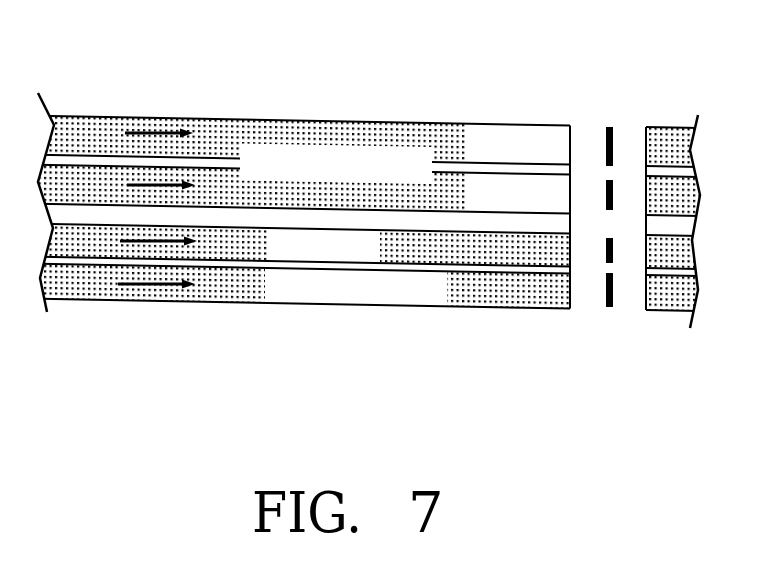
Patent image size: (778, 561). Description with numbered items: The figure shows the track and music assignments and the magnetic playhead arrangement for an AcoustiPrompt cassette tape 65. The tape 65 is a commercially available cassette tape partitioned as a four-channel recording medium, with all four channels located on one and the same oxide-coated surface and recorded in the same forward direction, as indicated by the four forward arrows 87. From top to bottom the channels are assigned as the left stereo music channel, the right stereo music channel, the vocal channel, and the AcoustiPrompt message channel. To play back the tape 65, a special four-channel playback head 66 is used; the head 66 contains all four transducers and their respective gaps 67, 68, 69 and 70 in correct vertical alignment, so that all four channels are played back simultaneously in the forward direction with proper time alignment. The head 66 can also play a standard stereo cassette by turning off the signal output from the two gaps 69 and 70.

The AcoustiPrompt cassette tape 65 is at (330, 108).
The four-channel playback head 66 is at (660, 121).
The transducer gap 67 is at (603, 140).
The transducer gap 68 is at (607, 195).
The transducer gap 69 is at (603, 245).
The transducer gap 70 is at (605, 292).
The forward arrows 87 is at (147, 184).